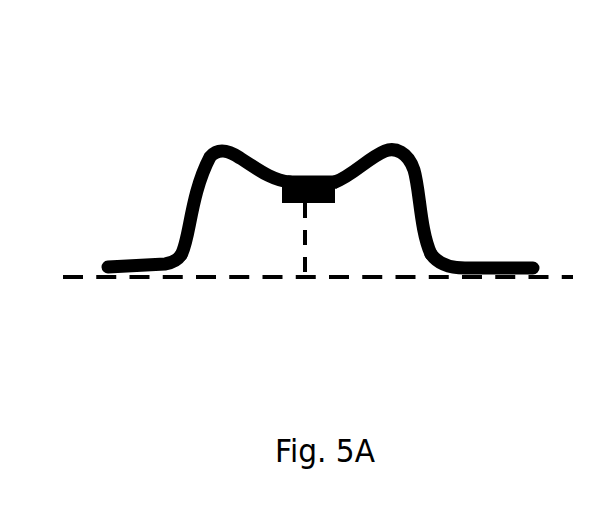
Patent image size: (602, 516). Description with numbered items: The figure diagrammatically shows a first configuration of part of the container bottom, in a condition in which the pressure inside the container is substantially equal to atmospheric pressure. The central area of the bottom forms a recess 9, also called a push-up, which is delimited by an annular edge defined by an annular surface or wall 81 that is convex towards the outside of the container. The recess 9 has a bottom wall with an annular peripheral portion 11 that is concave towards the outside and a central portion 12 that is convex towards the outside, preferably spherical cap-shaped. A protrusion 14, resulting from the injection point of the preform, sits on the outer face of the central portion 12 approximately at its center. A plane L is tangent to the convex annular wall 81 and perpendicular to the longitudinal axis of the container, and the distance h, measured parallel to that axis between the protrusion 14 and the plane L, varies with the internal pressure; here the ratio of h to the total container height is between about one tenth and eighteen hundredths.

The recess 9 is at (388, 230).
The annular peripheral portion 11 is at (210, 148).
The central portion 12 is at (353, 167).
The protrusion 14 is at (283, 203).
The annular surface or wall 81 is at (172, 277).
The plane L is at (72, 273).
The distance h is at (307, 237).